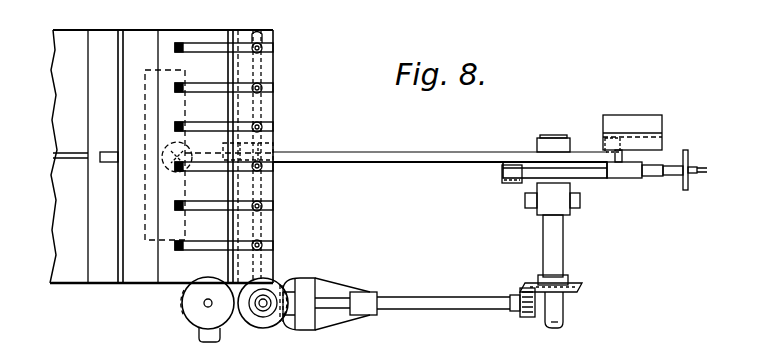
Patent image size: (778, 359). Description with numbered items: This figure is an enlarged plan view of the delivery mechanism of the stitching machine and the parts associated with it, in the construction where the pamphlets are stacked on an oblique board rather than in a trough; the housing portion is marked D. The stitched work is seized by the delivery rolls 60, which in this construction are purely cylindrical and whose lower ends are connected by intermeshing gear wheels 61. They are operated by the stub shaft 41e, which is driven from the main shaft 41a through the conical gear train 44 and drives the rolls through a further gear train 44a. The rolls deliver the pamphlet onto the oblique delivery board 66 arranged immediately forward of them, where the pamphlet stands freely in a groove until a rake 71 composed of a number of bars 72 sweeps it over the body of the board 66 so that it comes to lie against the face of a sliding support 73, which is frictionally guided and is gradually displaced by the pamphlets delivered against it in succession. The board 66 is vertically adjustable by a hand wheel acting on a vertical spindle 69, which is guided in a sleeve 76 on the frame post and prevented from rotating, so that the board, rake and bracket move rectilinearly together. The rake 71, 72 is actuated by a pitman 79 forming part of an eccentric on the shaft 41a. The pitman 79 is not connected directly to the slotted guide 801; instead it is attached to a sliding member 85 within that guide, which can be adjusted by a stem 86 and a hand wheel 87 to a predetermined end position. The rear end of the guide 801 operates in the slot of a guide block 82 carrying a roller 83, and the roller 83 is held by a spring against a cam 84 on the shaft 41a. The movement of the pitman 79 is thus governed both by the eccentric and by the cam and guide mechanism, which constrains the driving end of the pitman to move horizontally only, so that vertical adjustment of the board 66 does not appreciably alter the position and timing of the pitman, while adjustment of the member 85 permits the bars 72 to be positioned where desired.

The housing section D is at (158, 14).
The oblique delivery board 66 is at (82, 265).
The sliding support 73 is at (102, 268).
The vertical spindle 69 is at (165, 163).
The sleeve 76 is at (165, 148).
The bars 72 is at (263, 48).
The rake 71 is at (260, 185).
The pitman 79 is at (403, 157).
The guide 801 is at (577, 170).
The roller 83 is at (503, 182).
The guide block 82 is at (647, 127).
The sliding member 85 is at (633, 177).
The hand wheel 87 is at (685, 150).
The stem 86 is at (700, 174).
The cam 84 is at (588, 178).
The shaft 41a is at (553, 250).
The conical gear train 44 is at (540, 292).
The stub shaft 41e is at (338, 300).
The gear train 44a is at (280, 282).
The intermeshing gear wheels 61 is at (188, 313).
The delivery rolls 60 is at (252, 308).